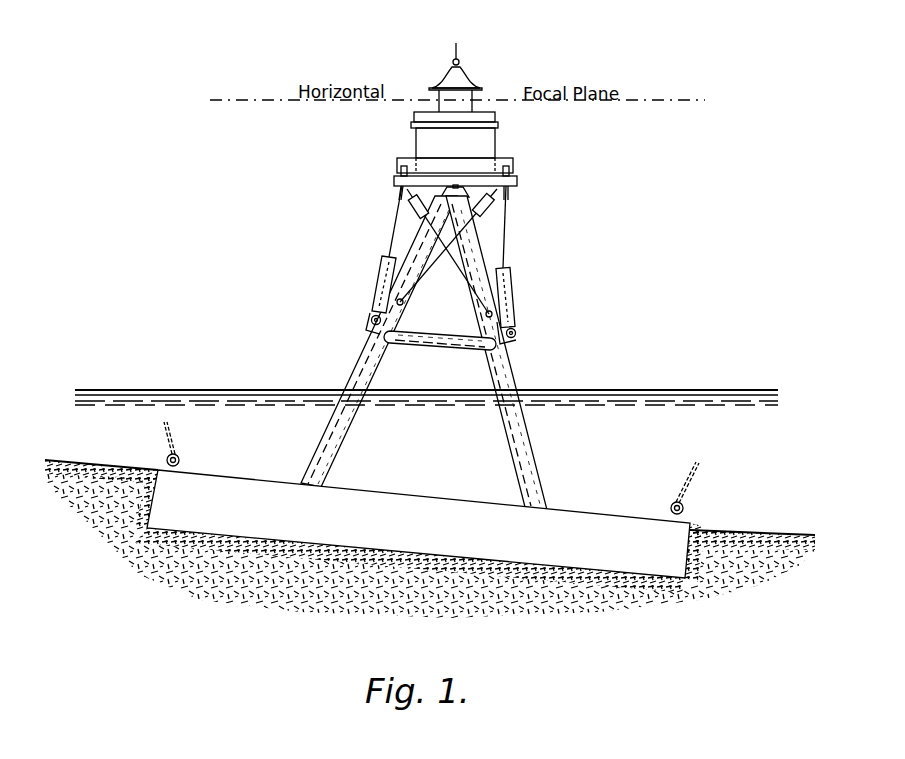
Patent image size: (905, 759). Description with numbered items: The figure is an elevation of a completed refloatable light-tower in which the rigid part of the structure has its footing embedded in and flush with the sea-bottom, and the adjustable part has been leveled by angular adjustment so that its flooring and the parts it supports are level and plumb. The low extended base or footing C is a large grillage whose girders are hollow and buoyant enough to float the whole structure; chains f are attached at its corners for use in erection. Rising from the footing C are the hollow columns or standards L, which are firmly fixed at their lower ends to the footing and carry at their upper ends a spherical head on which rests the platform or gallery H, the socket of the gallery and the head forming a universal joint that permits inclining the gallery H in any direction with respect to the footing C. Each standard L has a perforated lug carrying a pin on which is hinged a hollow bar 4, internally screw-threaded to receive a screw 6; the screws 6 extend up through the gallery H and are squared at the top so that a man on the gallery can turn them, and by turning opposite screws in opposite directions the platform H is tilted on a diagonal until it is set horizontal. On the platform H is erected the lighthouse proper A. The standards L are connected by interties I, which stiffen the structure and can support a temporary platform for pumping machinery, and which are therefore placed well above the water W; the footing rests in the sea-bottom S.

The lighthouse proper A is at (455, 109).
The platform or gallery H is at (518, 181).
The hollow column L is at (354, 372).
The screw 6 is at (394, 226).
The hollow bar 4 is at (376, 294).
The intertie I is at (418, 338).
The water level W is at (426, 432).
The soil / sea bed S is at (125, 500).
The base or footing C is at (418, 524).
The chain f is at (183, 455).